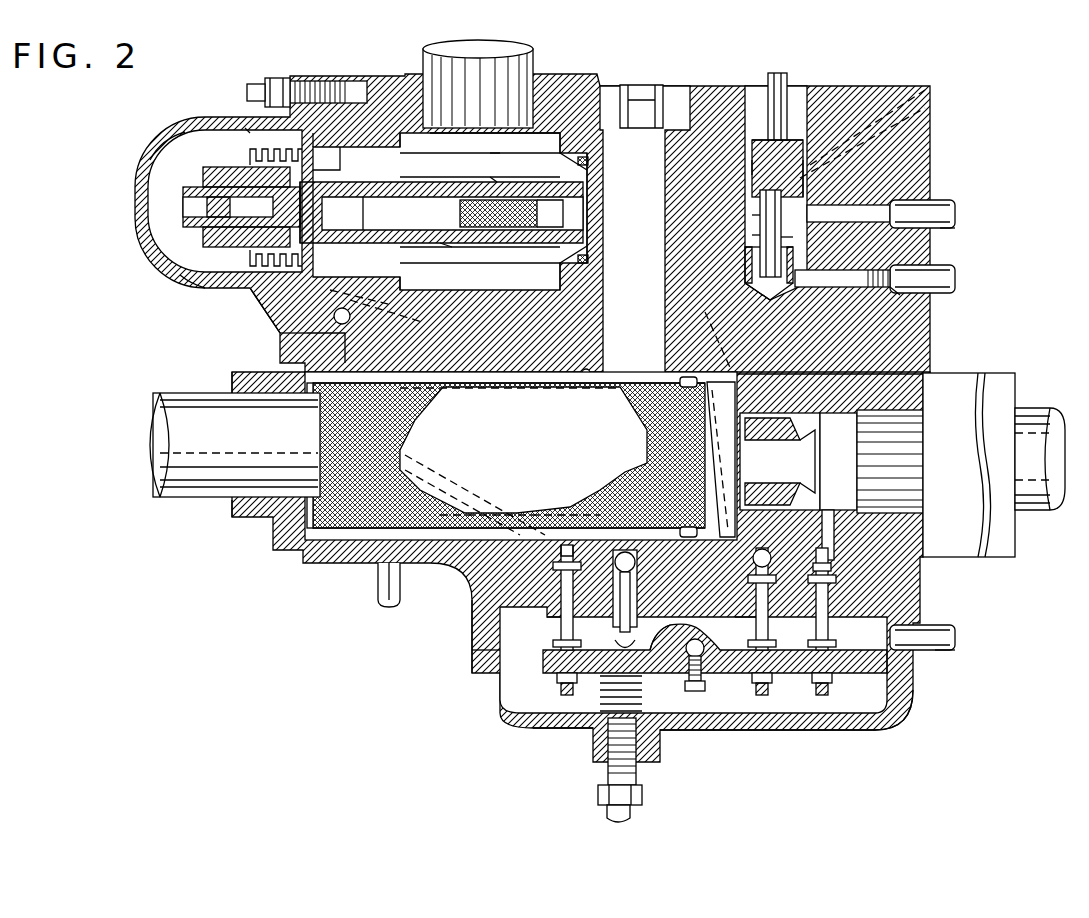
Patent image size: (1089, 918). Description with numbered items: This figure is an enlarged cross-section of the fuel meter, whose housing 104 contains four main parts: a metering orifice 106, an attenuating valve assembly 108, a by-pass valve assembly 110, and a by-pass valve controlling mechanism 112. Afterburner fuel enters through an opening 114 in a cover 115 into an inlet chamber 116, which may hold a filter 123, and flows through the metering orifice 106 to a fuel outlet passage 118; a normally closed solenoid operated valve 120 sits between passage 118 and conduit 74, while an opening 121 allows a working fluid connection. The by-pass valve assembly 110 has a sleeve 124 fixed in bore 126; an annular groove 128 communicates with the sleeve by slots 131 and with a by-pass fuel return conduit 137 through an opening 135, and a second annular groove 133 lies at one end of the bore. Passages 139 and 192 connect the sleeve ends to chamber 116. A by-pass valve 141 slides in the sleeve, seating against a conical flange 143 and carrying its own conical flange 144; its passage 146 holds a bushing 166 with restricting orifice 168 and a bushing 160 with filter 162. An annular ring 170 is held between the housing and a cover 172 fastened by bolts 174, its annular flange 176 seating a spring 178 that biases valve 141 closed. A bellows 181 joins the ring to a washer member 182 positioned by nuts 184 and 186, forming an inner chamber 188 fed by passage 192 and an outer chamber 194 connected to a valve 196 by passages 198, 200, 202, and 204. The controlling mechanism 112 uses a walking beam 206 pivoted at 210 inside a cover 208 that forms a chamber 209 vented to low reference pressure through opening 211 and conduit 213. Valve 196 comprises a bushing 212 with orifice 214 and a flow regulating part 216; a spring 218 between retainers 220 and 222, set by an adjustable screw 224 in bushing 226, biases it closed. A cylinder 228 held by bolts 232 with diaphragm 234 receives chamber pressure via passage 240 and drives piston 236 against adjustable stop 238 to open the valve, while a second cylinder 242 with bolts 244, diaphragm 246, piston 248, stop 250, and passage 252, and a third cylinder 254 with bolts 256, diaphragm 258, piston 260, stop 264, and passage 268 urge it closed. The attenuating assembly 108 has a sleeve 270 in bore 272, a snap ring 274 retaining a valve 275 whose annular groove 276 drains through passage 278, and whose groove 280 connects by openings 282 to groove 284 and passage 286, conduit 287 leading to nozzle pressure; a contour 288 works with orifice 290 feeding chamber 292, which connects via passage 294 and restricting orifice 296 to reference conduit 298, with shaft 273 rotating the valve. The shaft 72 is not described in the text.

The shaft 72 is at (165, 425).
The conduit 74 is at (1030, 412).
The housing 104 is at (707, 82).
The metering orifice 106 is at (795, 438).
The valve assembly 108 is at (752, 181).
The by-pass valve assembly 110 is at (245, 128).
The by-pass valve controlling mechanism 112 is at (520, 680).
The opening 114 is at (280, 344).
The cover 115 is at (232, 374).
The chamber 116 is at (592, 372).
The fuel outlet passage 118 is at (860, 462).
The solenoid operated valve 120 is at (955, 570).
The opening 121 is at (378, 591).
The filter 123 is at (565, 427).
The sleeve 124 is at (400, 178).
The bore 126 is at (600, 162).
The annular groove 128 is at (542, 150).
The slots 131 is at (497, 160).
The second annular groove 133 is at (325, 138).
The opening 135 is at (448, 136).
The by-pass fuel return conduit 137 is at (534, 62).
The passage 139 is at (606, 304).
The by-pass valve 141 is at (497, 182).
The conical flange 143 is at (600, 180).
The conical flange 144 is at (378, 214).
The passage 146 is at (452, 247).
The bushing 160 is at (594, 203).
The filter 162 is at (462, 213).
The bushing 166 is at (183, 206).
The restricting orifice 168 is at (205, 238).
The annular ring 170 is at (262, 300).
The cover 172 is at (156, 120).
The bolts 174 is at (303, 80).
The annular flange 176 is at (345, 150).
The spring 178 is at (322, 206).
The bellows 181 is at (212, 290).
The washer member 182 is at (250, 258).
The nut 184 is at (203, 176).
The nut 186 is at (250, 158).
The chamber 188 is at (312, 206).
The passage 192 is at (422, 322).
The chamber 194 is at (165, 152).
The valve 196 is at (640, 633).
The passage 198 is at (330, 318).
The passage 200 is at (392, 305).
The passage 202 is at (345, 347).
The passage 204 is at (425, 462).
The walking beam 206 is at (790, 672).
The cover 208 is at (855, 730).
The chamber 209 is at (763, 730).
The pivot 210 is at (705, 682).
The opening 211 is at (915, 625).
The bushing 212 is at (637, 580).
The conduit 213 is at (940, 650).
The orifice 214 is at (632, 647).
The flow regulating part 216 is at (620, 632).
The spring 218 is at (642, 688).
The spring retainer 220 is at (642, 705).
The spring retainer 222 is at (595, 690).
The adjustable screw 224 is at (600, 745).
The bushing 226 is at (600, 783).
The cylinder 228 is at (556, 592).
The bolts 232 is at (472, 625).
The diaphragm 234 is at (553, 570).
The piston 236 is at (563, 632).
The adjustable stop 238 is at (480, 650).
The passage 240 is at (561, 558).
The second cylinder 242 is at (838, 605).
The bolts 244 is at (835, 665).
The diaphragm 246 is at (835, 578).
The piston 248 is at (830, 584).
The adjustable stop 250 is at (836, 674).
The passage 252 is at (840, 512).
The third cylinder 254 is at (746, 603).
The bolts 256 is at (740, 628).
The diaphragm 258 is at (752, 572).
The piston 260 is at (750, 585).
The adjustable stop 264 is at (770, 656).
The passage 268 is at (705, 312).
The sleeve 270 is at (760, 201).
The bore 272 is at (803, 190).
The shaft 273 is at (788, 88).
The snap ring 274 is at (750, 141).
The valve 275 is at (867, 127).
The annular groove 276 is at (752, 166).
The passage 278 is at (862, 140).
The annular groove 280 is at (760, 241).
The openings 282 is at (760, 221).
The annular groove 284 is at (800, 237).
The passage 286 is at (896, 212).
The conduit 287 is at (945, 230).
The contour 288 is at (750, 263).
The orifice 290 is at (794, 261).
The chamber 292 is at (800, 314).
The passage 294 is at (835, 288).
The restricting orifice 296 is at (900, 295).
The reference fuel pressure conduit 298 is at (930, 280).